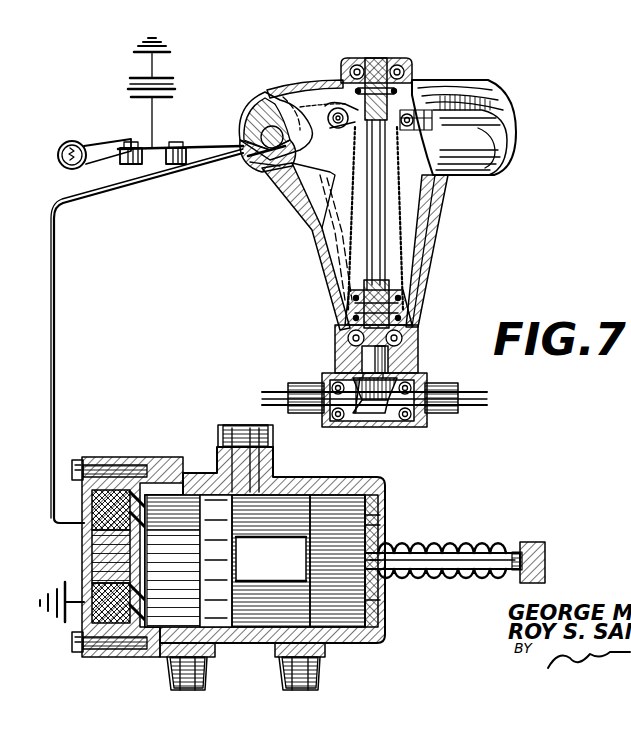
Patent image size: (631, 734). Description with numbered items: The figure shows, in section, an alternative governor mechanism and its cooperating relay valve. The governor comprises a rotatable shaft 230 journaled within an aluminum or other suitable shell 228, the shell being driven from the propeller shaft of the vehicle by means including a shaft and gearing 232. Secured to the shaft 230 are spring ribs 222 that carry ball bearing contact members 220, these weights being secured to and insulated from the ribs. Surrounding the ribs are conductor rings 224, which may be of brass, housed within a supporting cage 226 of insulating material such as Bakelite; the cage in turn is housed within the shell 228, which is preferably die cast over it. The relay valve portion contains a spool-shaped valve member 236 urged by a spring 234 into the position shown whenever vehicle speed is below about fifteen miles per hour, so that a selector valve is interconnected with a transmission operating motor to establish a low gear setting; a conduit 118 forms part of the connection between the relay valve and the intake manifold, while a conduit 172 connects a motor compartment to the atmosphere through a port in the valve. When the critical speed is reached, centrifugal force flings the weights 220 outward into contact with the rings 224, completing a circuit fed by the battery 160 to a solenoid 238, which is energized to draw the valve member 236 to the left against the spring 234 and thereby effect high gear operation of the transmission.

The conduit 118 is at (257, 438).
The battery 160 is at (312, 688).
The conduit 172 is at (170, 687).
The ball bearing contact members 220 is at (332, 133).
The spring ribs 222 is at (395, 232).
The conductor rings 224 is at (275, 175).
The supporting cage 226 is at (250, 128).
The shell 228 is at (316, 252).
The rotatable shaft 230 is at (338, 356).
The shaft and gearing 232 is at (378, 406).
The spring 234 is at (436, 548).
The spool-shaped valve member 236 is at (270, 565).
The solenoid 238 is at (82, 570).